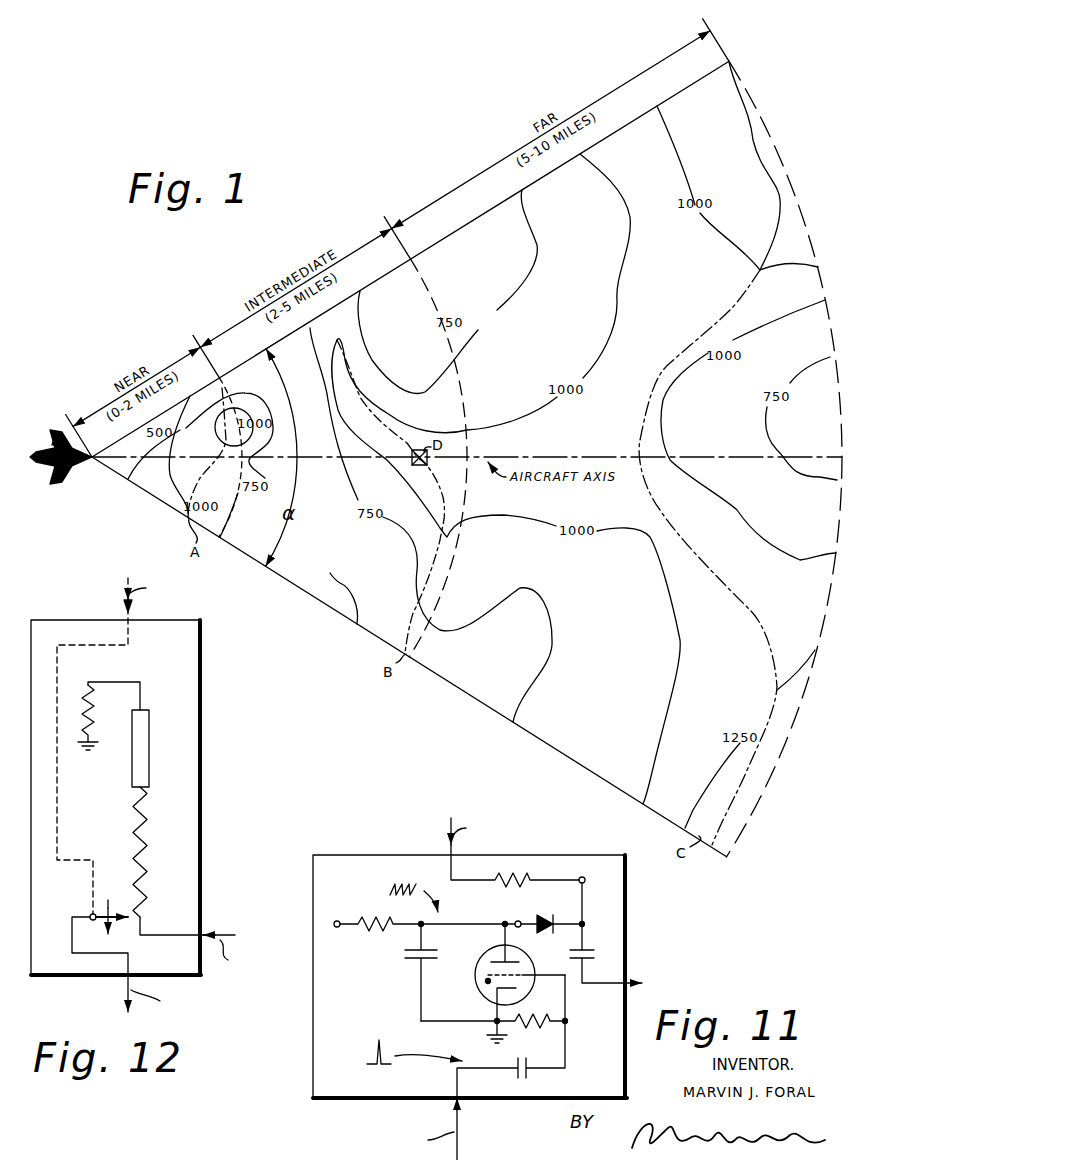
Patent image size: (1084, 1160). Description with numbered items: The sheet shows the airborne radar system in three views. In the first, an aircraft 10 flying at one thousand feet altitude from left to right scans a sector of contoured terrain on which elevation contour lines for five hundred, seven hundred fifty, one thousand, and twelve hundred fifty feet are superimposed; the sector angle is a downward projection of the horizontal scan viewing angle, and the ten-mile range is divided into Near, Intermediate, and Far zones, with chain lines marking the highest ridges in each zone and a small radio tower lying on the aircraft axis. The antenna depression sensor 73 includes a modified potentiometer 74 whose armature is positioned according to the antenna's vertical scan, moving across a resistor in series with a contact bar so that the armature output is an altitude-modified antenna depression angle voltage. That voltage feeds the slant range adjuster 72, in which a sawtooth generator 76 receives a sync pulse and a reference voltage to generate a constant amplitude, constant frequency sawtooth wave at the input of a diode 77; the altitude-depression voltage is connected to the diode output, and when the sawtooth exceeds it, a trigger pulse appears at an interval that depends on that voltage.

In FIG. 1, the aircraft 10 is at (73, 469).
In FIG. 11, the slant range adjuster 72 is at (349, 855).
In FIG. 12, the antenna depression sensor 73 is at (70, 620).
In FIG. 12, the modified potentiometer 74 is at (124, 808).
In FIG. 11, the sawtooth generator 76 is at (458, 995).
In FIG. 11, the diode 77 is at (542, 917).